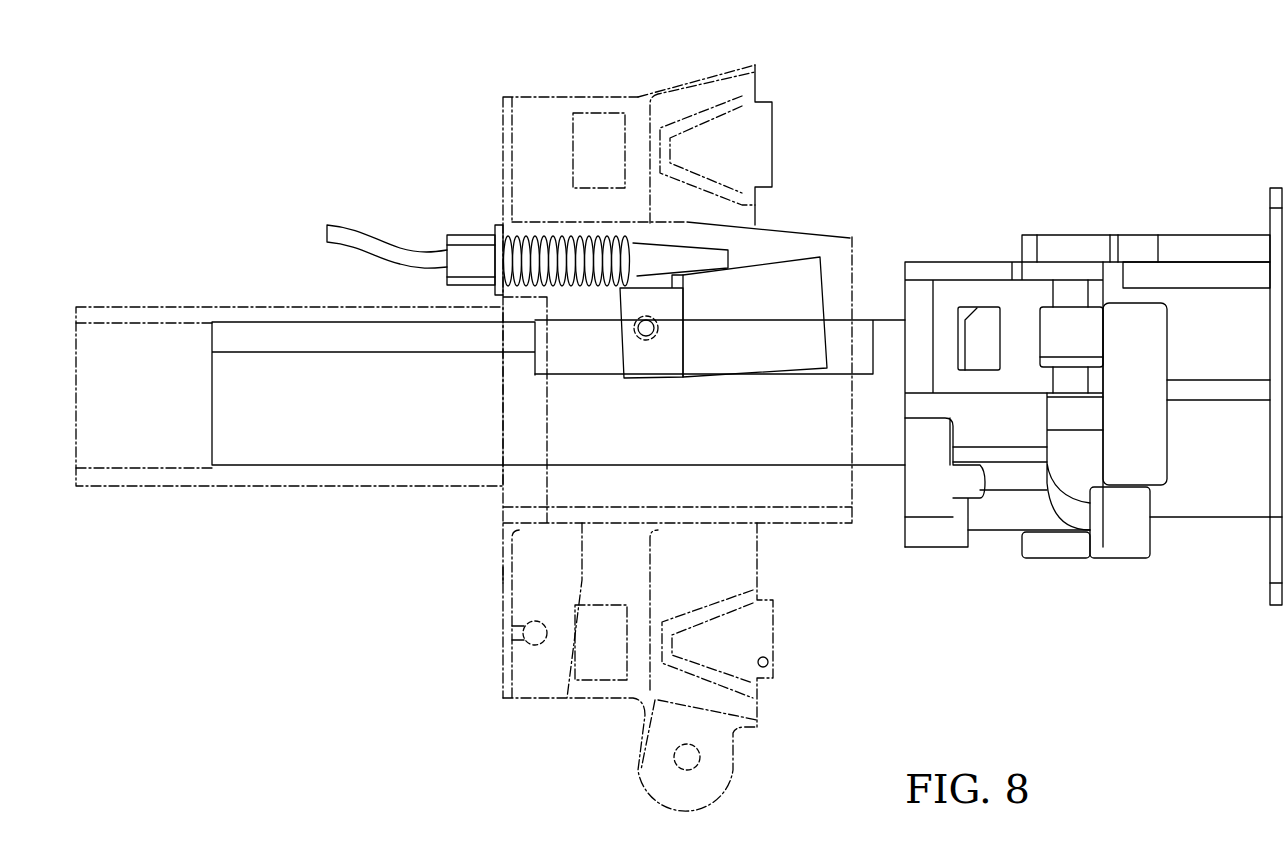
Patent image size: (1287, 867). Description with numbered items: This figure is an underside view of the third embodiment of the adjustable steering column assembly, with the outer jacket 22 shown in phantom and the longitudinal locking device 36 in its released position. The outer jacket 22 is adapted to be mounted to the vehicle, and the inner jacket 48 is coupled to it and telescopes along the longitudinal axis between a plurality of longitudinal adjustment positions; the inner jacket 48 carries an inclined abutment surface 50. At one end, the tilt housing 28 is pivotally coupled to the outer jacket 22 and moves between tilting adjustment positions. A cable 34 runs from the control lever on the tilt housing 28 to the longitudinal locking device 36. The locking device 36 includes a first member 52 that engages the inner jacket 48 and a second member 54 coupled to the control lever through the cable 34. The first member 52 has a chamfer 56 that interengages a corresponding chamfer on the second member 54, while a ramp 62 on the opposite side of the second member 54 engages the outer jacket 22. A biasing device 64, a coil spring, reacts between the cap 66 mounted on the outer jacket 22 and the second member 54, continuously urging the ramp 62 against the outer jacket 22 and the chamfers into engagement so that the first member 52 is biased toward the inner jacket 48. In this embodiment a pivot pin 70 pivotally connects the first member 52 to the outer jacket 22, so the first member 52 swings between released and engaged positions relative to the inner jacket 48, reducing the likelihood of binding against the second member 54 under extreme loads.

The outer jacket 22 is at (160, 432).
The inner jacket 48 is at (307, 445).
The abutment surface 50 is at (577, 330).
The cable 34 is at (357, 240).
The cap 66 is at (457, 252).
The biasing device 64 is at (562, 240).
The second member 54 is at (667, 257).
The pivot pin 70 is at (646, 316).
The first member 52 is at (808, 277).
The longitudinal locking device 36 is at (747, 248).
The ramp 62 is at (710, 247).
The chamfer 56 is at (670, 277).
The tilt housing 28 is at (1137, 590).